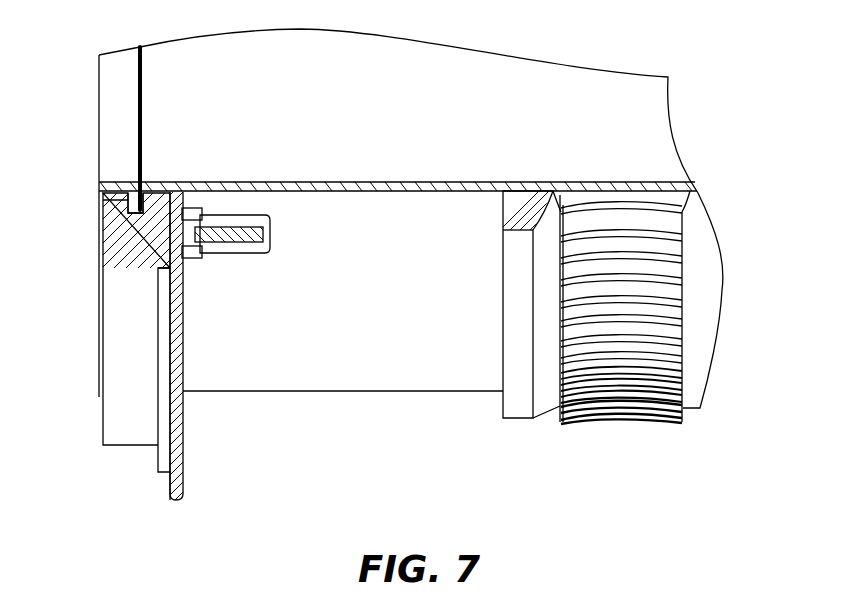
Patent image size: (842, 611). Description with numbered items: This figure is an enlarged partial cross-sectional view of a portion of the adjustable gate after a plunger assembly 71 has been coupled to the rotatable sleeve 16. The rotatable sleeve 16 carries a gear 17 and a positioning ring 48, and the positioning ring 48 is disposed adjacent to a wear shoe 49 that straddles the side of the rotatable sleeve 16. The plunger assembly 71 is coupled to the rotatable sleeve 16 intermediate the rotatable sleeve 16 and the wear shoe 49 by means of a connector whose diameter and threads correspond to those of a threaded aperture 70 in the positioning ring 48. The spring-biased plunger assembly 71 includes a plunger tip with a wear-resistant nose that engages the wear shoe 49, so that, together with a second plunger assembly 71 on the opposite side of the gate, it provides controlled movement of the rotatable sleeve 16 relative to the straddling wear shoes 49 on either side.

The rotatable sleeve 16 is at (378, 182).
The gear 17 is at (665, 289).
The positioning ring 48 is at (184, 484).
The wear shoe 49 is at (110, 243).
The threaded aperture 70 is at (165, 231).
The plunger assembly 71 is at (237, 208).